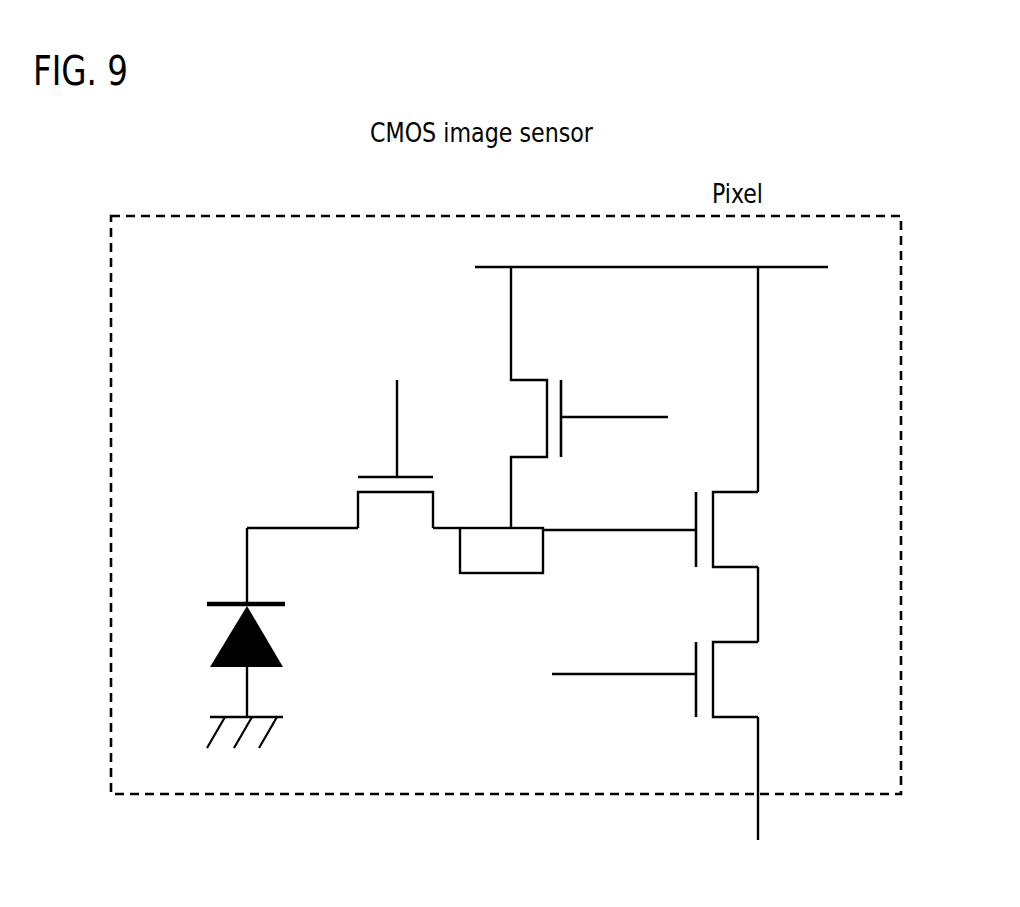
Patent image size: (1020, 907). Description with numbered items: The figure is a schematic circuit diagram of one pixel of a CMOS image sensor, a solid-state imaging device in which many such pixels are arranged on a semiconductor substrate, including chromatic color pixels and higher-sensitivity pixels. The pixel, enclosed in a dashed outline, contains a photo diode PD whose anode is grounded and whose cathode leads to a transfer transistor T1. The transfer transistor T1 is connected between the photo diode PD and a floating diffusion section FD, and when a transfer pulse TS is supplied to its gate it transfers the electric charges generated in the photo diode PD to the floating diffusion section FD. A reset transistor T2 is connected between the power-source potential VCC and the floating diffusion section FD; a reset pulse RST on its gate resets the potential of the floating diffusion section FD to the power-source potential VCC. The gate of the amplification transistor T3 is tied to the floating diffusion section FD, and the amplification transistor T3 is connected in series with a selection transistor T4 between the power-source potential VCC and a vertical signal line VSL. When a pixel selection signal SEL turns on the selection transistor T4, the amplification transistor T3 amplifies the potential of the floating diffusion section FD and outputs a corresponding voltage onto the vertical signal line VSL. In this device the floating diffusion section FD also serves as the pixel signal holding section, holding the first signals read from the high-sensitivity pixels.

The transfer transistor T1 is at (342, 458).
The reset transistor T2 is at (596, 380).
The amplification transistor T3 is at (742, 527).
The selection transistor T4 is at (750, 680).
The photo diode PD is at (218, 647).
The floating diffusion section FD is at (501, 550).
The transfer pulse TS is at (398, 413).
The reset pulse RST is at (639, 419).
The pixel selection signal SEL is at (598, 678).
The power-source potential VCC is at (651, 251).
The vertical signal line VSL is at (753, 799).